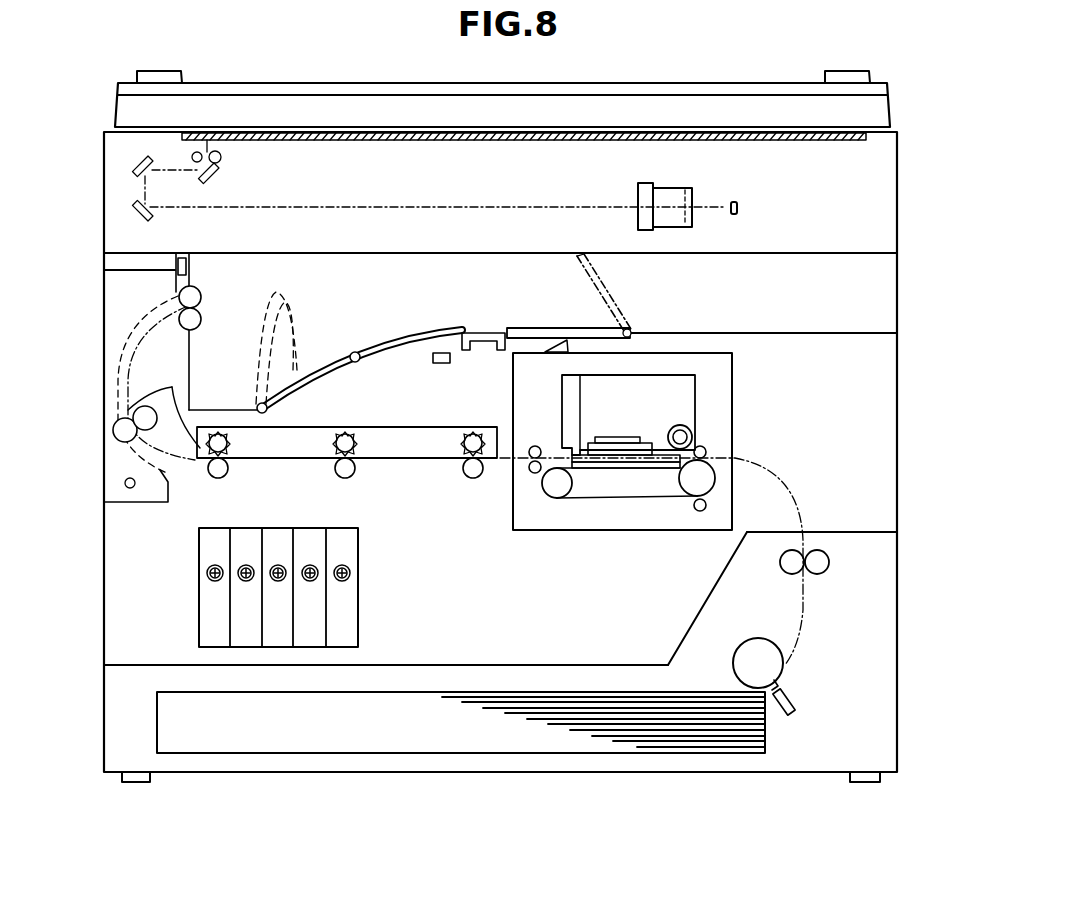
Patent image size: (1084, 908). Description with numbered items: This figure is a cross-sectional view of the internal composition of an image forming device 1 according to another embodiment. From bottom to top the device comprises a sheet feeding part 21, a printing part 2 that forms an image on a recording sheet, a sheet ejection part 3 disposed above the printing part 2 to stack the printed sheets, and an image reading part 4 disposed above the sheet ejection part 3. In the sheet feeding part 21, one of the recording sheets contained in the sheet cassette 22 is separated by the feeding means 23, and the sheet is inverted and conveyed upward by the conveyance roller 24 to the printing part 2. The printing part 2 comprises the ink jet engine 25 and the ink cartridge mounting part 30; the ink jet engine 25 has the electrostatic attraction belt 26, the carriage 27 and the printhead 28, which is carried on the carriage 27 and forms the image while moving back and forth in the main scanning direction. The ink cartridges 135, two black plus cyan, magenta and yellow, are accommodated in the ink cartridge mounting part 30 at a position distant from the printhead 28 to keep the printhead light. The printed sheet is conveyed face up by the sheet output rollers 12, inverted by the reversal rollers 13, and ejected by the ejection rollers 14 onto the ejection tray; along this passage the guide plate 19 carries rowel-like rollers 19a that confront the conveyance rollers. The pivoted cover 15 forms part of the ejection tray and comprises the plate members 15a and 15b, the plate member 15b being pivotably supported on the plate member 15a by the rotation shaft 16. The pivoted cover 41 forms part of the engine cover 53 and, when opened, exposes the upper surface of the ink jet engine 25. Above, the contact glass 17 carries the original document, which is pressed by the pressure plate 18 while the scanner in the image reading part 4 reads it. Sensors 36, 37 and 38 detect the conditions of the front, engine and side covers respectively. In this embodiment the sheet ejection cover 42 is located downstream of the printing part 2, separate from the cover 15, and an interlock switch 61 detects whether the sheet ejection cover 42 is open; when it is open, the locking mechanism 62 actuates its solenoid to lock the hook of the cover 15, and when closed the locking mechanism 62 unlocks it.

The image forming device 1 is at (708, 62).
The printing part 2 is at (889, 496).
The sheet ejection part 3 is at (887, 292).
The image reading part 4 is at (887, 192).
The sheet output rollers 12 is at (352, 470).
The reversal rollers 13 is at (156, 404).
The ejection rollers 14 is at (203, 297).
The pivoted cover 15 is at (312, 304).
The plate member 15a is at (312, 368).
The plate member 15b is at (390, 344).
The rotation shaft 16 is at (358, 363).
The contact glass 17 is at (500, 140).
The pressure plate 18 is at (320, 100).
The guide plate 19 is at (312, 432).
The rowel-like rollers 19a is at (232, 470).
The sheet feeding part 21 is at (897, 640).
The sheet cassette 22 is at (352, 753).
The feeding means 23 is at (734, 672).
The conveyance roller 24 is at (831, 562).
The ink jet engine 25 is at (732, 398).
The electrostatic attraction belt 26 is at (615, 498).
The carriage 27 is at (562, 398).
The printhead 28 is at (630, 440).
The ink cartridge mounting part 30 is at (199, 598).
The sensor 36 is at (362, 512).
The sensor 37 is at (577, 330).
The sensor 38 is at (880, 356).
The pivoted cover 41 is at (518, 327).
The sheet ejection cover 42 is at (118, 306).
The engine cover 53 is at (727, 333).
The interlock switch 61 is at (176, 256).
The locking mechanism 62 is at (441, 365).
The ink cartridge 135 is at (352, 604).